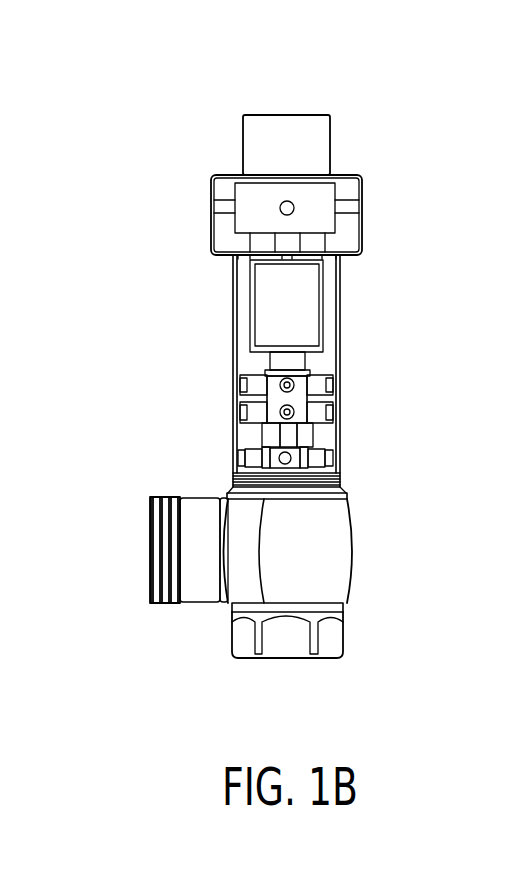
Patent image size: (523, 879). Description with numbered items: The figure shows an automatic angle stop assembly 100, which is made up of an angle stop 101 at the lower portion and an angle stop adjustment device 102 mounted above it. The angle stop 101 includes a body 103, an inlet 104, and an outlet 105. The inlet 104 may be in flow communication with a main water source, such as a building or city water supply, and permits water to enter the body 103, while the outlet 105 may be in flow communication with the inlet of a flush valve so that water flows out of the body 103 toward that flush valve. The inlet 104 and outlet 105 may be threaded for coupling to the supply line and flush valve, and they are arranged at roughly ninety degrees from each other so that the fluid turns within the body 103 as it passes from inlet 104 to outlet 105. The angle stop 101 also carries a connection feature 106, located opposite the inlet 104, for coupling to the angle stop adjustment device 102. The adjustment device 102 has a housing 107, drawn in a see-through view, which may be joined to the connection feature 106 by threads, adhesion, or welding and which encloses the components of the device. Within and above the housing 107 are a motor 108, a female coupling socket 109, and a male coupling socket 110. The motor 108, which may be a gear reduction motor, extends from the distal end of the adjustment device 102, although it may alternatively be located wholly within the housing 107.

The automatic angle stop assembly 100 is at (105, 116).
The angle stop 101 is at (447, 473).
The angle stop adjustment device 102 is at (449, 113).
The body 103 is at (345, 556).
The inlet 104 is at (278, 658).
The outlet 105 is at (150, 556).
The connection feature 106 is at (235, 482).
The housing 107 is at (243, 289).
The motor 108 is at (320, 150).
The female coupling socket 109 is at (280, 277).
The male coupling socket 110 is at (277, 360).